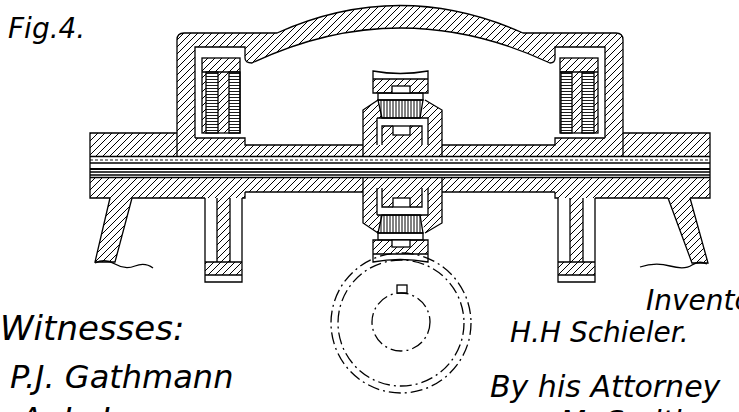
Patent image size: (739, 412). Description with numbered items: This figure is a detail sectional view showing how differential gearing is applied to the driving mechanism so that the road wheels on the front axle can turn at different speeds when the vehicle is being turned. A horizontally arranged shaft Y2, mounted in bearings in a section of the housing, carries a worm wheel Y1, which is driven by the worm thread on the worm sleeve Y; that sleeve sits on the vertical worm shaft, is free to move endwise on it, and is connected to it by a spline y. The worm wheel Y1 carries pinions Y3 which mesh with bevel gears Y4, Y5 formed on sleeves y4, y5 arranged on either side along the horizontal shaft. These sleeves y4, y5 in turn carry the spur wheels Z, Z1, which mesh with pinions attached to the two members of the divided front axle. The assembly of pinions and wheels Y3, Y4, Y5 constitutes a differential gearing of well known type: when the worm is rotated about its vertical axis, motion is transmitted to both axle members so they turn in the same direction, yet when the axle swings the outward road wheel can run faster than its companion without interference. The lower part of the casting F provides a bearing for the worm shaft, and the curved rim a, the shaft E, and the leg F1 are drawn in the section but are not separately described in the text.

The curved casing rim a is at (462, 23).
The spur wheel Z is at (216, 55).
The spur wheel Z1 is at (585, 57).
The shaft E is at (702, 162).
The casting F is at (100, 245).
The right supporting leg F1 is at (733, 233).
The worm sleeve Y is at (360, 363).
The worm wheel Y1 is at (455, 247).
The horizontally arranged shaft Y2 is at (403, 333).
The pinions Y3 is at (428, 82).
The bevel gear Y4 is at (368, 108).
The bevel gear Y5 is at (440, 110).
The spline y is at (407, 288).
The sleeve y4 is at (292, 147).
The sleeve y5 is at (493, 147).